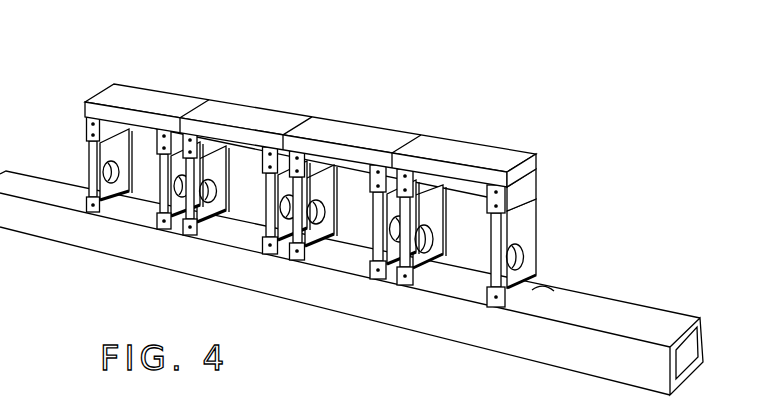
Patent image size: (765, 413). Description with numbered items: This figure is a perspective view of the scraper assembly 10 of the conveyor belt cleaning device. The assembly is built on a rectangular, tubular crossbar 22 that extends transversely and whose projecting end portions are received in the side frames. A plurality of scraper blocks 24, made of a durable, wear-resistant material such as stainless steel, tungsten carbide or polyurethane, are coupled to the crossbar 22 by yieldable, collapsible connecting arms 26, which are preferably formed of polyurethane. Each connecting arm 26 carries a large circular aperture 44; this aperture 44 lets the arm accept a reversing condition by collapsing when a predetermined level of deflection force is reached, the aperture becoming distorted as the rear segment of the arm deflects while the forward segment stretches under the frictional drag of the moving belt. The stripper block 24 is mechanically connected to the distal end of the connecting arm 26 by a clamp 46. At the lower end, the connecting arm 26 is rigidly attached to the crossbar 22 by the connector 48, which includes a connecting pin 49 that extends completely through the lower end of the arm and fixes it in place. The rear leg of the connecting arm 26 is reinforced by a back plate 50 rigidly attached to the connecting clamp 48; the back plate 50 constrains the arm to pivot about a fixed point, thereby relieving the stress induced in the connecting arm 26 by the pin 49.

The scraper assembly 10 is at (392, 80).
The crossbar 22 is at (634, 322).
The scraper block 24 is at (87, 99).
The connecting arm 26 is at (92, 170).
The aperture 44 is at (119, 183).
The clamp 46 is at (533, 182).
The connector 48 is at (526, 291).
The connecting pin 49 is at (90, 120).
The back plate 50 is at (134, 172).